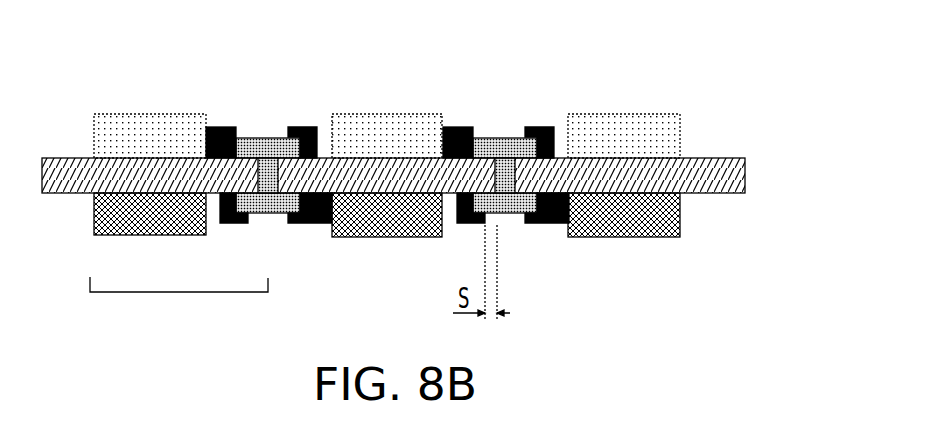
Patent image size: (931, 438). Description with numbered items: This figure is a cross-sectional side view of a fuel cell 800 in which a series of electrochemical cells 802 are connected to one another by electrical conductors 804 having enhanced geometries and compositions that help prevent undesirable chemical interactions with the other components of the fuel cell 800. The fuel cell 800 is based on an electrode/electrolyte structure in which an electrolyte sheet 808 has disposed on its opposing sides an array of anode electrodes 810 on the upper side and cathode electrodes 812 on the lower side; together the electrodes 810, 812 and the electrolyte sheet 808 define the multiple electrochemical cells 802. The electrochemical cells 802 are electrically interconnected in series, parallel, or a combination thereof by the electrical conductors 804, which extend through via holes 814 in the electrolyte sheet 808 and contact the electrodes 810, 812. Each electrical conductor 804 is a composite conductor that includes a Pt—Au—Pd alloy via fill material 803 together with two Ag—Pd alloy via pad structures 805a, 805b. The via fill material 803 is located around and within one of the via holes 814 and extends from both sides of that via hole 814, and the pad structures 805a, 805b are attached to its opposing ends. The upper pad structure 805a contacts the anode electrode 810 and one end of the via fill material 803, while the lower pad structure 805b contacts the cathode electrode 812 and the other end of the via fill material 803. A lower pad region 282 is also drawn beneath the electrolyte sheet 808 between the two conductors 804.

The fuel cell 800 is at (727, 43).
The electrochemical cell 802 is at (180, 295).
The electrical conductor 804 is at (411, 157).
The Pt—Au—Pd alloy via fill material 803 is at (307, 133).
The Ag—Pd alloy via pad structure 805a is at (236, 126).
The Ag—Pd alloy via pad structure 805b is at (292, 226).
The electrolyte sheet 808 is at (703, 195).
The anode electrode 810 is at (158, 116).
The cathode electrode 812 is at (155, 238).
The via hole 814 is at (258, 175).
The conductive pad 282 is at (390, 238).